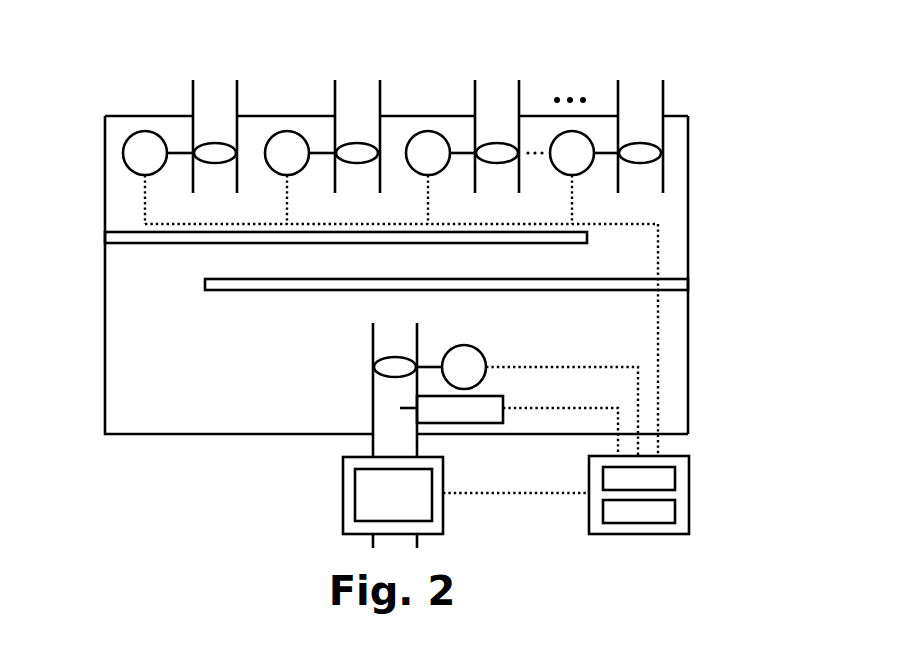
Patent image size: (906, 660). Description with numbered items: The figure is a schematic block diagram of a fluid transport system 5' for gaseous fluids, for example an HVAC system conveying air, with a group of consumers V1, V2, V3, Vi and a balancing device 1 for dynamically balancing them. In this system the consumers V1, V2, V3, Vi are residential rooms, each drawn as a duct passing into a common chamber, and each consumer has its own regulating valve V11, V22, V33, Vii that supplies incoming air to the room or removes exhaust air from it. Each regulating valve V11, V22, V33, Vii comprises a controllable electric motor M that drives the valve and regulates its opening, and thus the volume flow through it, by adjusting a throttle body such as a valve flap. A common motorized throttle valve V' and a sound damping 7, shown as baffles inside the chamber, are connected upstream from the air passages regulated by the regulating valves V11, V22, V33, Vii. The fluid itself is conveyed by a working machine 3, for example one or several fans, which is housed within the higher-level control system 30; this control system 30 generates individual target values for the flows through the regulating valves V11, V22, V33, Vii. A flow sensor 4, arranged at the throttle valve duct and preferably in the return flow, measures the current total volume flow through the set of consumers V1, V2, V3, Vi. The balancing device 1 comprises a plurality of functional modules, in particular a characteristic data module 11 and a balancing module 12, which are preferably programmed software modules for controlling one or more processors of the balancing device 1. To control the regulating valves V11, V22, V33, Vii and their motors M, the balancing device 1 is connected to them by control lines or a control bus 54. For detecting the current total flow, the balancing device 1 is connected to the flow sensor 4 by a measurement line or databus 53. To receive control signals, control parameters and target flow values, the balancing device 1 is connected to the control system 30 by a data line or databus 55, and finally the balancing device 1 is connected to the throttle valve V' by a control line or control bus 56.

The balancing device 1 is at (681, 467).
The characteristic data module 11 is at (665, 481).
The balancing module 12 is at (665, 514).
The working machine 3 is at (362, 487).
The higher-level control system 30 is at (348, 515).
The flow sensor 4 is at (489, 420).
The fluid transport system 5' is at (396, 298).
The sound damping 7 is at (146, 266).
The measurement line or databus 53 is at (560, 409).
The control lines or control bus 54 is at (657, 305).
The data line or databus 55 is at (523, 495).
The control line or control bus 56 is at (572, 364).
The consumer V1 is at (214, 91).
The consumer V2 is at (355, 91).
The consumer V3 is at (495, 91).
The consumer Vi is at (637, 91).
The regulating valve V11 is at (215, 167).
The regulating valve V22 is at (357, 167).
The regulating valve V33 is at (497, 167).
The regulating valve Vii is at (640, 167).
The common motorized throttle valve V' is at (429, 423).